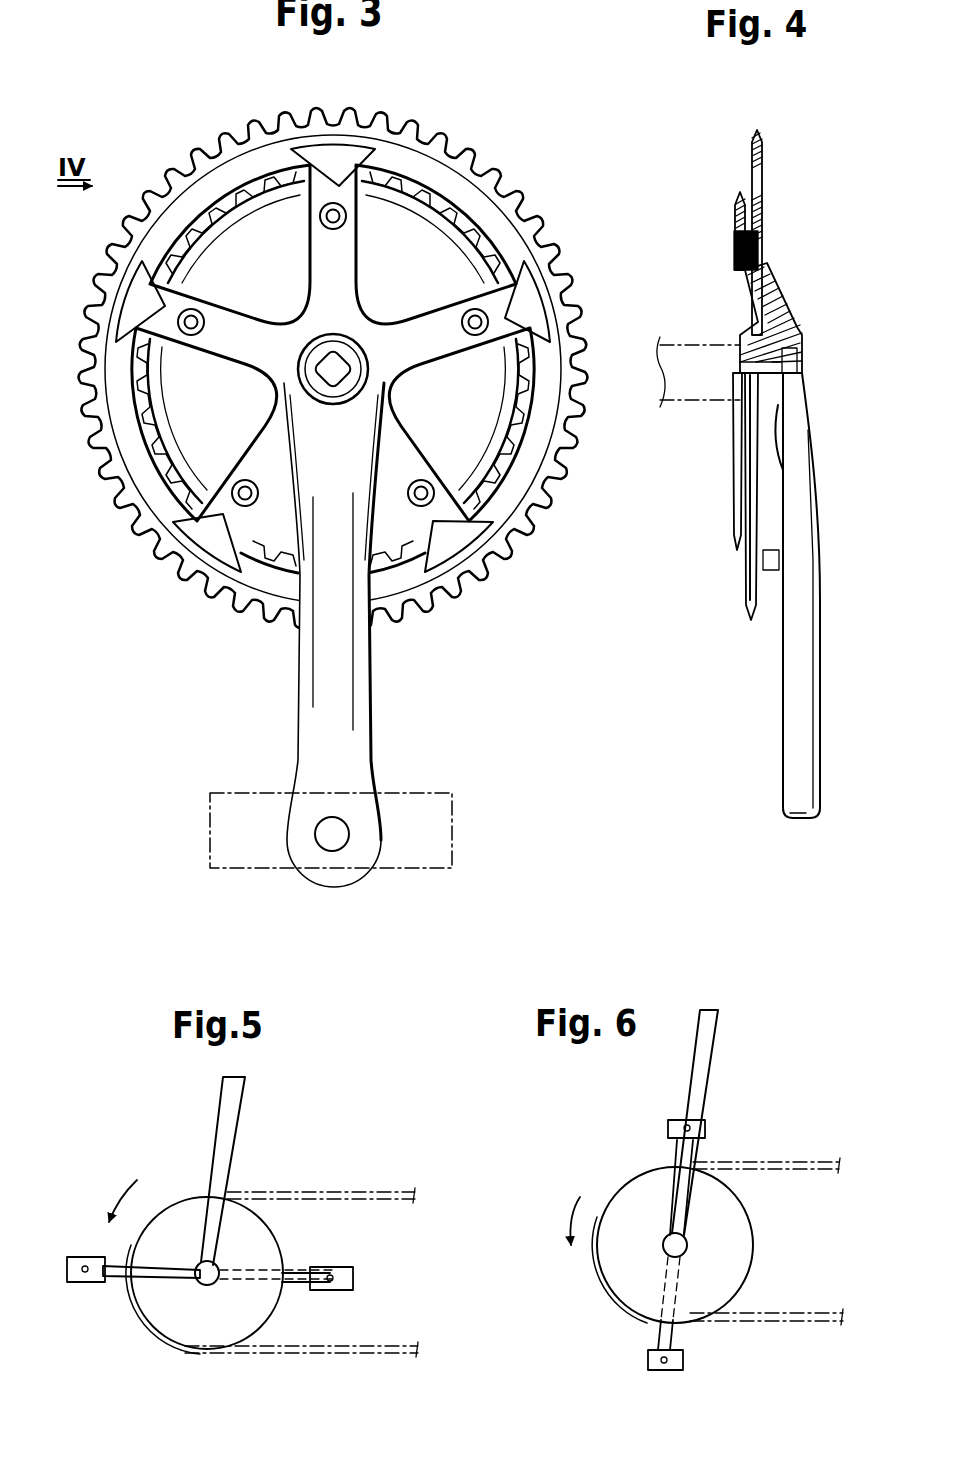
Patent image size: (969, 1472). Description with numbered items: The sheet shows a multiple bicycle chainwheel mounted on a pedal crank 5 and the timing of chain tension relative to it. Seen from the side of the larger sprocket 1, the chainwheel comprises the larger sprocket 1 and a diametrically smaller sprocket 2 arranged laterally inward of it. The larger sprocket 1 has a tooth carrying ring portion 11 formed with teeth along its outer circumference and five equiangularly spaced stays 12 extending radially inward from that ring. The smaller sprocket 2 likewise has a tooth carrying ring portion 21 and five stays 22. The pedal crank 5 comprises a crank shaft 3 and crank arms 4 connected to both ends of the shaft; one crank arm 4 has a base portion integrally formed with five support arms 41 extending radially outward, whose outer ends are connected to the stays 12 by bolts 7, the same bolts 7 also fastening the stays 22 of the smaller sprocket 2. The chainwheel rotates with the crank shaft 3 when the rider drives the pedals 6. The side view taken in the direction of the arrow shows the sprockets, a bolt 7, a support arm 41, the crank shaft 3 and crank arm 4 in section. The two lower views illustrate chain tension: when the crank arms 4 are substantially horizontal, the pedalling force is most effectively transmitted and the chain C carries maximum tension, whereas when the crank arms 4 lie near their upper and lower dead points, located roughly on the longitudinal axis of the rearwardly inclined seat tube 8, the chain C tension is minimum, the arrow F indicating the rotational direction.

In FIG. 3, the larger sprocket 1 is at (541, 237).
In FIG. 4, the larger sprocket 1 is at (746, 580).
In FIG. 3, the tooth carrying ring portion 11 is at (477, 153).
In FIG. 3, the stays 12 is at (308, 224).
In FIG. 4, the stays 12 is at (763, 215).
In FIG. 3, the smaller sprocket 2 is at (182, 440).
In FIG. 4, the smaller sprocket 2 is at (731, 491).
In FIG. 3, the tooth carrying ring portion 21 is at (150, 410).
In FIG. 4, the stays 22 is at (740, 215).
In FIG. 4, the crank shaft 3 is at (683, 345).
In FIG. 3, the crank arms 4 is at (307, 676).
In FIG. 4, the crank arms 4 is at (806, 483).
In FIG. 5, the crank arms 4 is at (117, 1285).
In FIG. 6, the crank arms 4 is at (673, 1185).
In FIG. 3, the support arms 41 is at (409, 440).
In FIG. 4, the support arms 41 is at (770, 283).
In FIG. 3, the pedal crank 5 is at (356, 703).
In FIG. 4, the pedal crank 5 is at (811, 428).
In FIG. 3, the pedals 6 is at (232, 870).
In FIG. 4, the bolts 7 is at (760, 237).
In FIG. 5, the seat tube 8 is at (222, 1128).
In FIG. 6, the seat tube 8 is at (704, 1075).
In FIG. 5, the chain C is at (325, 1192).
In FIG. 6, the chain C is at (805, 1162).
In FIG. 5, the rotation direction F is at (107, 1204).
In FIG. 6, the rotation direction F is at (560, 1227).